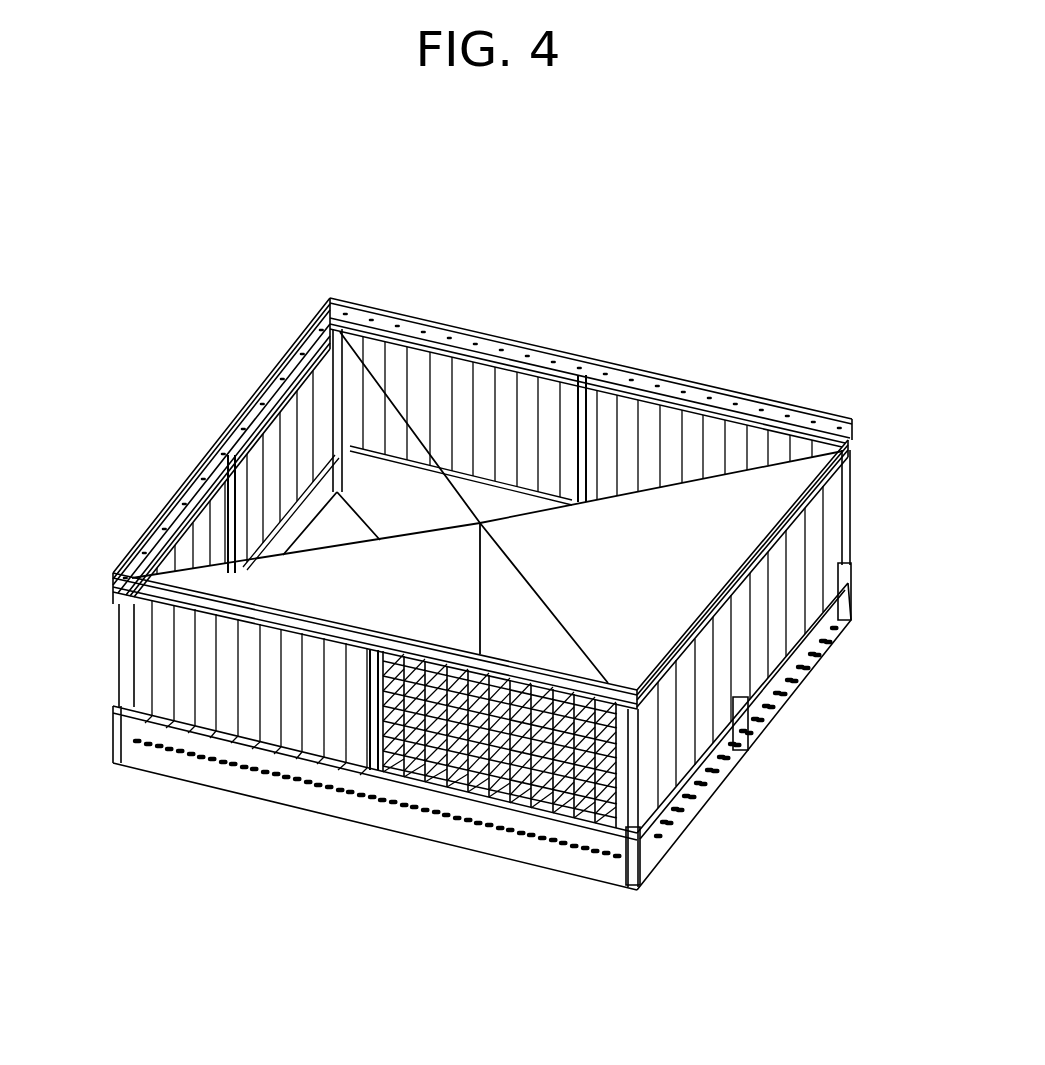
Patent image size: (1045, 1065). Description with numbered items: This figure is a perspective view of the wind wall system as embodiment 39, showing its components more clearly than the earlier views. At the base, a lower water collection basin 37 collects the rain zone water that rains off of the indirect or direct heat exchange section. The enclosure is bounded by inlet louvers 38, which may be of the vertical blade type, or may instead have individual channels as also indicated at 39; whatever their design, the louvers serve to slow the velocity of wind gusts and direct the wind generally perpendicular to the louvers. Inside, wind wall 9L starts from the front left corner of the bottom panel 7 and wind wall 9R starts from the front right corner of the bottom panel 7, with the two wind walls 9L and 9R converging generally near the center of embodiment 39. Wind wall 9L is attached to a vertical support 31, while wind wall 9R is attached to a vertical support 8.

The embodiment 39 is at (380, 247).
The wind wall 9L is at (443, 613).
The wind wall 9R is at (527, 620).
The lower water collection basin 37 is at (332, 533).
The vertical support 31 is at (133, 624).
The inlet louvers 38 is at (287, 720).
The bottom panel 7 is at (175, 780).
The vertical support 8 is at (630, 770).